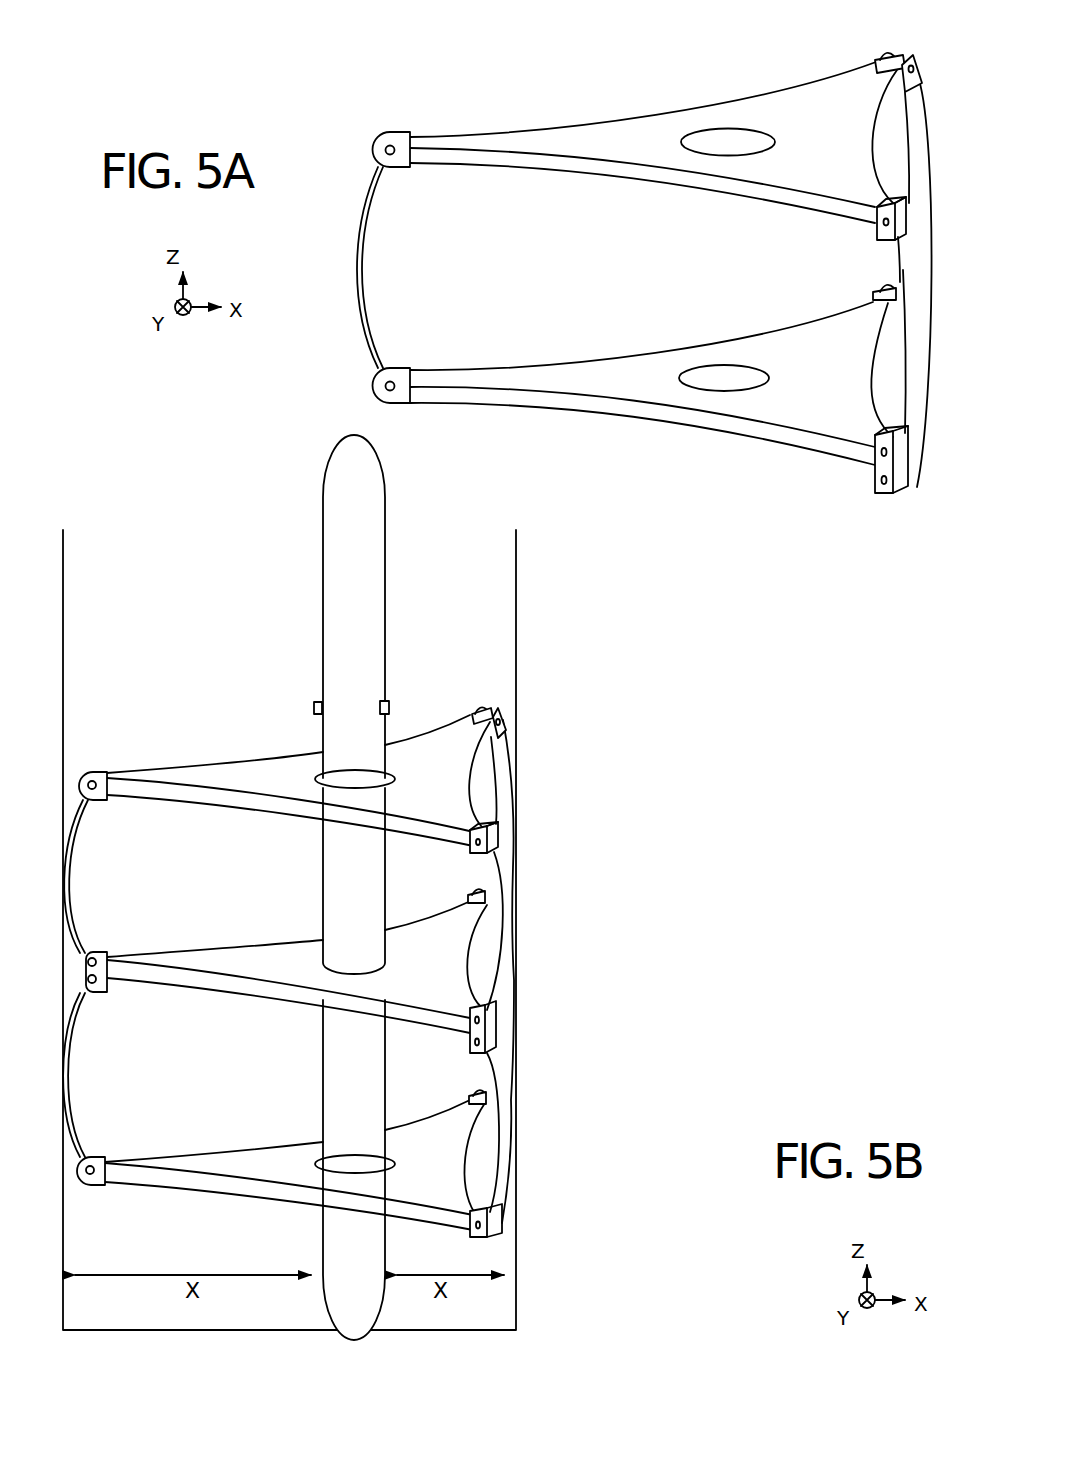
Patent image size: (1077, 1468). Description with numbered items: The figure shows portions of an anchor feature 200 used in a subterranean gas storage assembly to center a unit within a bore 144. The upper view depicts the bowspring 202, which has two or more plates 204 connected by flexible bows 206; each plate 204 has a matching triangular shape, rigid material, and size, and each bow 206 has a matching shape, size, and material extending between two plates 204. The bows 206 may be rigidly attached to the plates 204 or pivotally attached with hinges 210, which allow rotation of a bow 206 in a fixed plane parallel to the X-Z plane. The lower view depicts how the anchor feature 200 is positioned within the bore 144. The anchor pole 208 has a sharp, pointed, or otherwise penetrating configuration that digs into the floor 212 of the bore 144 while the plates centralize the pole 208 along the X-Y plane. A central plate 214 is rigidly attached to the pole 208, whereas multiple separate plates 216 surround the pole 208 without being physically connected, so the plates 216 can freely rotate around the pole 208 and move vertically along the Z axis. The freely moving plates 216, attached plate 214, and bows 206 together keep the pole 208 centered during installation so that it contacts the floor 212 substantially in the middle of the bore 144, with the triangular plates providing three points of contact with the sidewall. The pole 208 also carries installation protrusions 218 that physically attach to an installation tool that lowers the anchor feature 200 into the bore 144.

In FIG. 5B, the bore 144 is at (518, 642).
In FIG. 5A, the anchor feature 200 is at (314, 76).
In FIG. 5B, the anchor feature 200 is at (537, 520).
In FIG. 5A, the bowspring 202 is at (306, 326).
In FIG. 5A, the plate 204 is at (643, 263).
In FIG. 5A, the bow 206 is at (362, 240).
In FIG. 5B, the bow 206 is at (62, 918).
In FIG. 5B, the anchor pole 208 is at (354, 887).
In FIG. 5A, the hinge 210 is at (398, 127).
In FIG. 5B, the hinge 210 is at (94, 770).
In FIG. 5B, the floor 212 is at (289, 1330).
In FIG. 5B, the central plate 214 is at (290, 966).
In FIG. 5B, the separate plate 216 is at (291, 972).
In FIG. 5B, the installation protrusion 218 is at (310, 708).